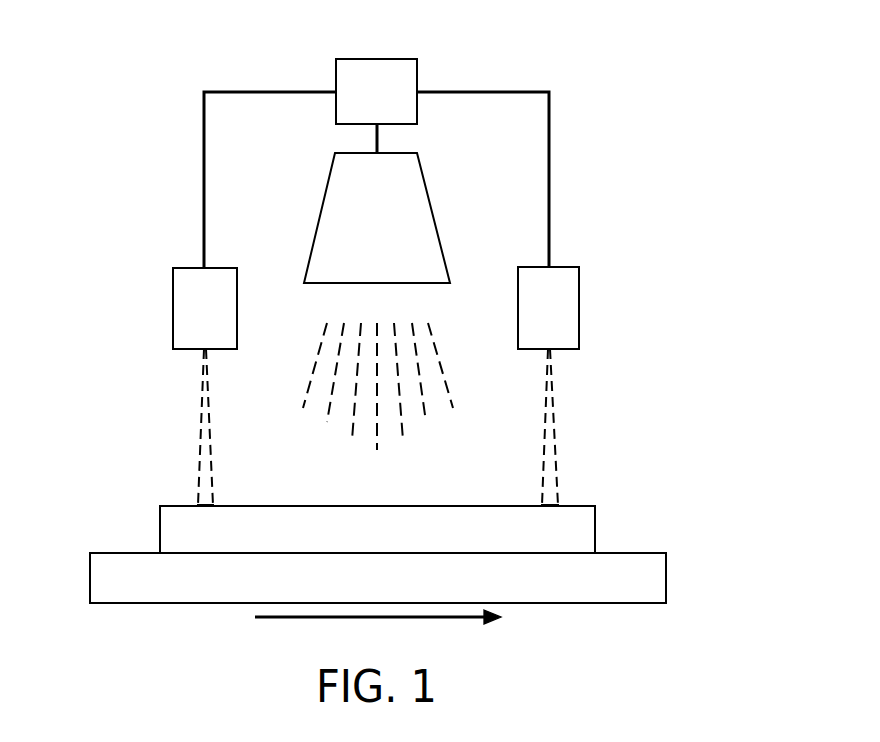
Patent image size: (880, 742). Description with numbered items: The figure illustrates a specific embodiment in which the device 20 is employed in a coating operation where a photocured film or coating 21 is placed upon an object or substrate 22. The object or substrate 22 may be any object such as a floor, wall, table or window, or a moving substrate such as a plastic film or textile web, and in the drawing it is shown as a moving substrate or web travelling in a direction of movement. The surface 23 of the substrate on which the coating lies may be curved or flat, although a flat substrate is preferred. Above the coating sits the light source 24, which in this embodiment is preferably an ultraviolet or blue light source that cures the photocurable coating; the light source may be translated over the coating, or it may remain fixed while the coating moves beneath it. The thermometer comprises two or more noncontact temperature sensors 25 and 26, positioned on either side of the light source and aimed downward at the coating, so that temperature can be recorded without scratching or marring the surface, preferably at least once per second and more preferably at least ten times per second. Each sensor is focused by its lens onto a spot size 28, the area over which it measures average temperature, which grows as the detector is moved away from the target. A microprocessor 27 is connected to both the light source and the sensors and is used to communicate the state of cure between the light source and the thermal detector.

The device 20 is at (146, 112).
The photocured film or coating 21 is at (377, 529).
The object or substrate 22 is at (378, 605).
The surface 23 is at (588, 505).
The light source 24 is at (374, 287).
The noncontact temperature sensor 25 is at (228, 268).
The noncontact temperature sensor 26 is at (563, 267).
The microprocessor 27 is at (376, 151).
The spot size 28 is at (541, 505).